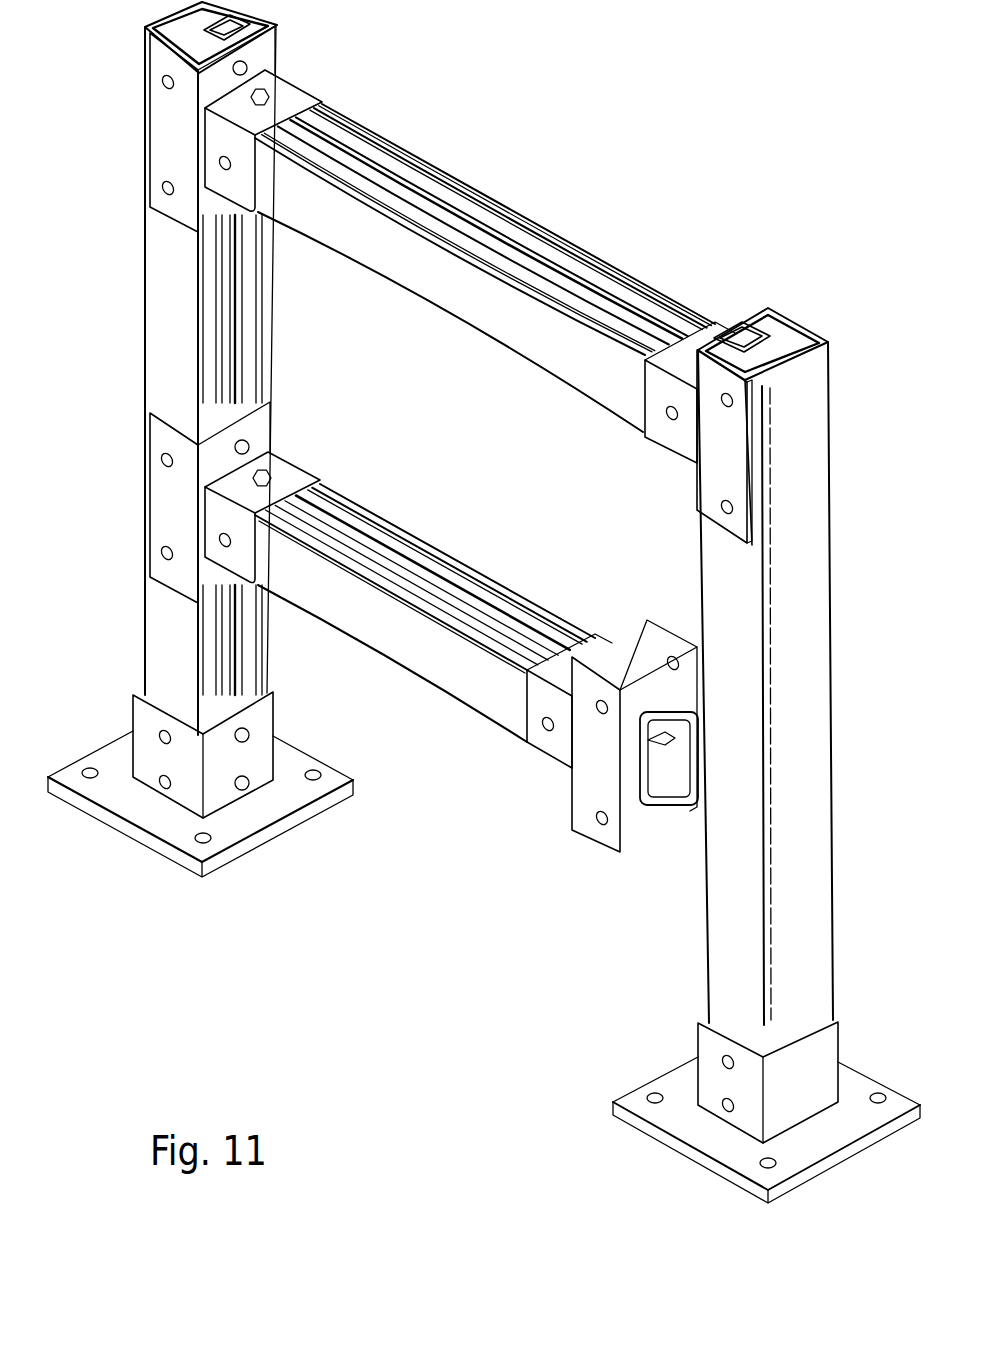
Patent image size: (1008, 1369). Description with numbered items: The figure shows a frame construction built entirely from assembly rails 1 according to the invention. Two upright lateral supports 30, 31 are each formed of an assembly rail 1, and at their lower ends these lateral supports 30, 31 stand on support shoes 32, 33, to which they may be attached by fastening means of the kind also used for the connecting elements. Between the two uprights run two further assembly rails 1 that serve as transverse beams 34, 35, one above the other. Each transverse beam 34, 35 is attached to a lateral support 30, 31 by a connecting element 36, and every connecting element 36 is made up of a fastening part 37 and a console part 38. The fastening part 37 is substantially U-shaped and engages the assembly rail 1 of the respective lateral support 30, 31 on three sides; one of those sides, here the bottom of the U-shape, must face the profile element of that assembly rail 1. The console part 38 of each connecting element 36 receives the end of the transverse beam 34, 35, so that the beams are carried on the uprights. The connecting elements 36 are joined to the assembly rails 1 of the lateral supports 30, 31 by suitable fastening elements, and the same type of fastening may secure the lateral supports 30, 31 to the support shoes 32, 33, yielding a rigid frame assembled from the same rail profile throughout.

The assembly rail 1 is at (257, 283).
The lateral support 30 is at (143, 320).
The lateral support 31 is at (830, 667).
The support shoe 32 is at (158, 822).
The support shoe 33 is at (730, 1143).
The transverse beam 34 is at (436, 167).
The transverse beam 35 is at (435, 548).
The connecting element 36 is at (417, 435).
The fastening part 37 is at (163, 110).
The console part 38 is at (297, 93).